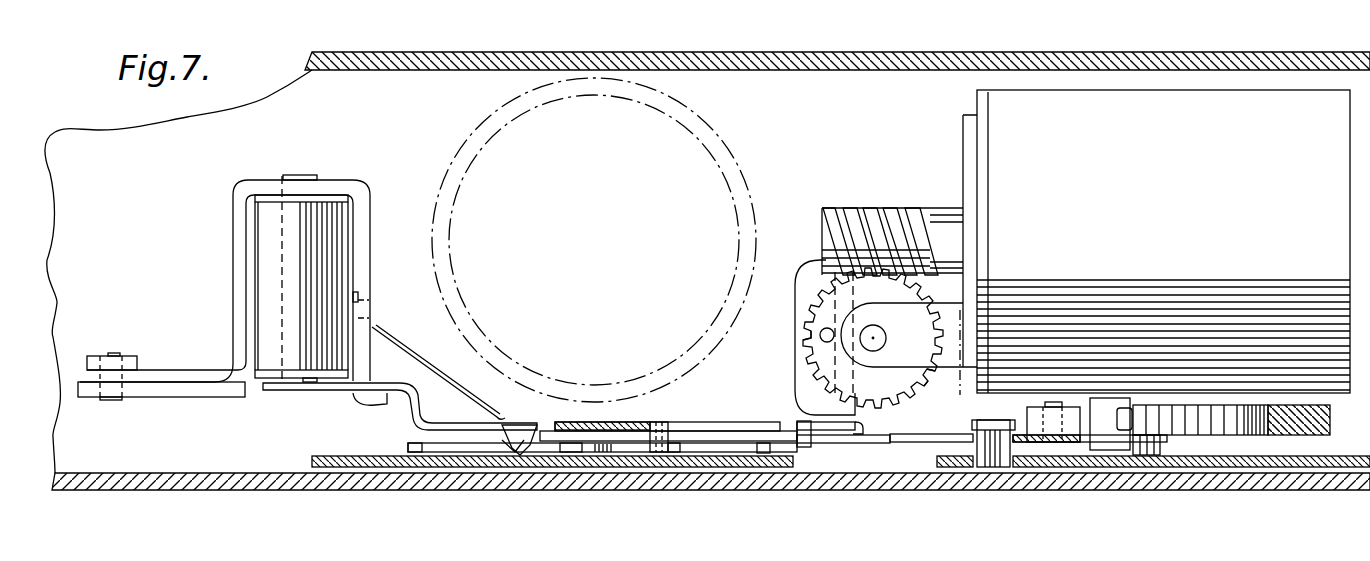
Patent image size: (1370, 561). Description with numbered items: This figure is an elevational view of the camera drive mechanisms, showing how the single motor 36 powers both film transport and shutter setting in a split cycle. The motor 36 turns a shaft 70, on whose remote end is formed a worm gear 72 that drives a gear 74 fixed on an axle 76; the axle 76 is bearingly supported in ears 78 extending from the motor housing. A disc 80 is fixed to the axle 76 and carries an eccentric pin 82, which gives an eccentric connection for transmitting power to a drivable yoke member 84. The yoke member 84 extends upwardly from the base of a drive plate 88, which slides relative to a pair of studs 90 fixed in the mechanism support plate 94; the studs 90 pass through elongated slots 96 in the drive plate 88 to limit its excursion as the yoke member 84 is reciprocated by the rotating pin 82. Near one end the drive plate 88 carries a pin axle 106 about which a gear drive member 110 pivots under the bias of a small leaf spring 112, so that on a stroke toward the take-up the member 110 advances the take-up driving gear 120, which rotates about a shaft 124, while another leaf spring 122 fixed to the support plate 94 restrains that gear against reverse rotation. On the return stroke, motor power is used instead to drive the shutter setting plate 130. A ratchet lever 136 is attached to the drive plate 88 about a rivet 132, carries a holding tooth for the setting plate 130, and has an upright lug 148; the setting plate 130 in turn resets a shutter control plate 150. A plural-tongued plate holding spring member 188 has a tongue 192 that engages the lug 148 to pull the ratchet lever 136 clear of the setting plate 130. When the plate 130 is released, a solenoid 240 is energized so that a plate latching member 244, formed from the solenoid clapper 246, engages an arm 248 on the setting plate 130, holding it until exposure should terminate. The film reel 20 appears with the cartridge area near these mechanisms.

The film spool / reel 20 is at (749, 160).
The motor 36 is at (1160, 204).
The shaft 70 is at (943, 210).
The worm gear 72 is at (858, 210).
The gear 74 is at (905, 386).
The axle 76 is at (887, 338).
The ears 78 is at (937, 372).
The disc 80 is at (818, 330).
The pin 82 is at (821, 338).
The yoke member 84 is at (793, 382).
The drive plate 88 is at (878, 444).
The studs 90 is at (985, 468).
The mechanism support plate 94 is at (1080, 468).
The elongated slots 96 is at (918, 443).
The pin axle 106 is at (1040, 402).
The gear drive member 110 is at (1100, 430).
The leaf spring 112 is at (1125, 431).
The take-up driving gear 120 is at (1230, 425).
The leaf spring 122 is at (1274, 422).
The shaft 124 is at (1165, 441).
The shutter setting plate 130 is at (404, 447).
The rivet 132 is at (812, 422).
The ratchet lever 136 is at (670, 452).
The lug 148 is at (663, 404).
The shutter control plate 150 is at (580, 452).
The plate holding spring member 188 is at (575, 423).
The tongue 192 is at (765, 453).
The solenoid 240 is at (268, 243).
The plate latching member 244 is at (515, 447).
The clapper 246 is at (348, 390).
The arm 248 is at (490, 447).